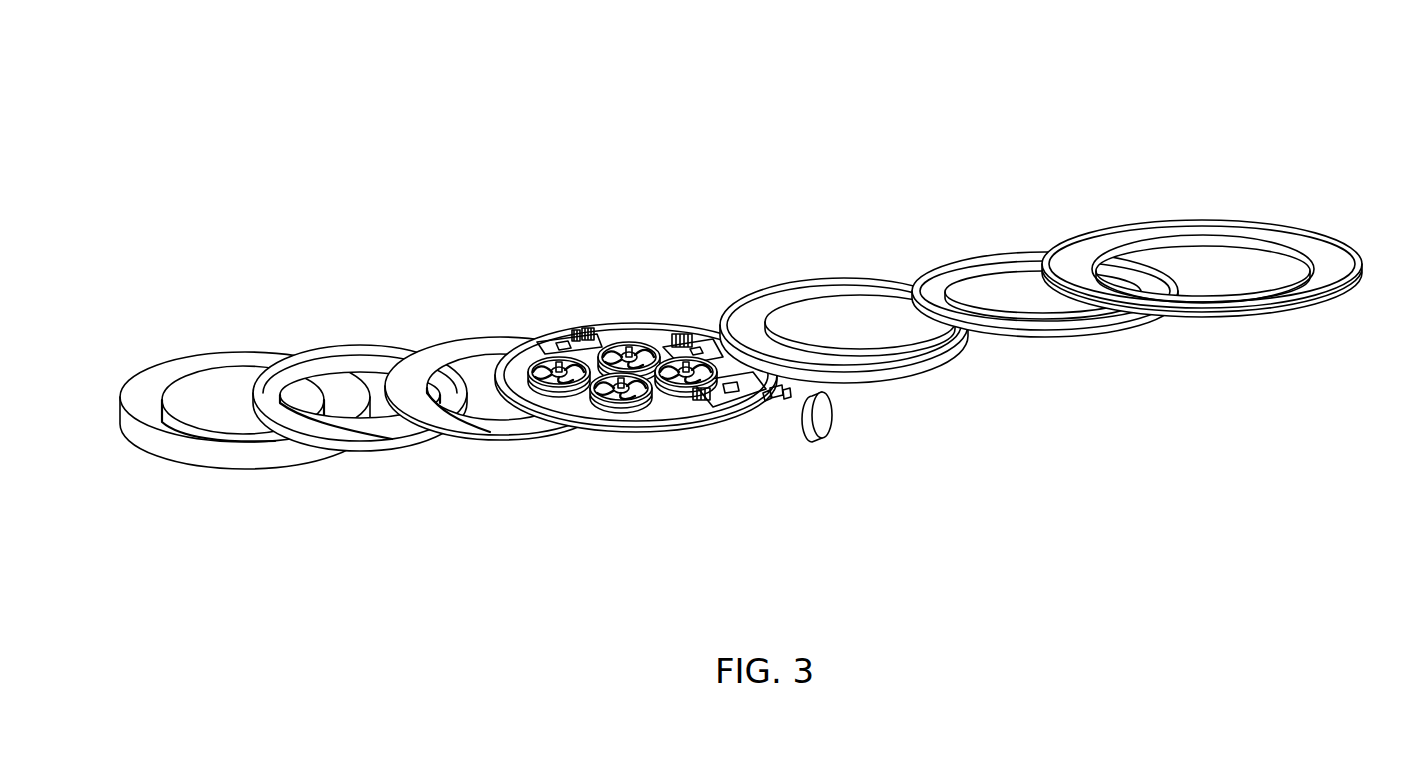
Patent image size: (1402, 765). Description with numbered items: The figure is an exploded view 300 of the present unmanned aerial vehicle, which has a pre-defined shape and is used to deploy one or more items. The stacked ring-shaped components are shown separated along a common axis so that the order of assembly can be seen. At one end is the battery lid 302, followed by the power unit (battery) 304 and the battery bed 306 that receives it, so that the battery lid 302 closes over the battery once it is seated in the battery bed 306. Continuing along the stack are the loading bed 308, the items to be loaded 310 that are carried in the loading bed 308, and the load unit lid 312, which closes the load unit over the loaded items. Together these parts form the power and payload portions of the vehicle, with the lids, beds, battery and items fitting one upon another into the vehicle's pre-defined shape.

The exploded view 300 is at (277, 91).
The battery lid 302 is at (1175, 240).
The power unit (battery) 304 is at (992, 258).
The battery bed 306 is at (788, 292).
The loading bed 308 is at (152, 380).
The items to be loaded 310 is at (352, 350).
The load unit lid 312 is at (487, 343).